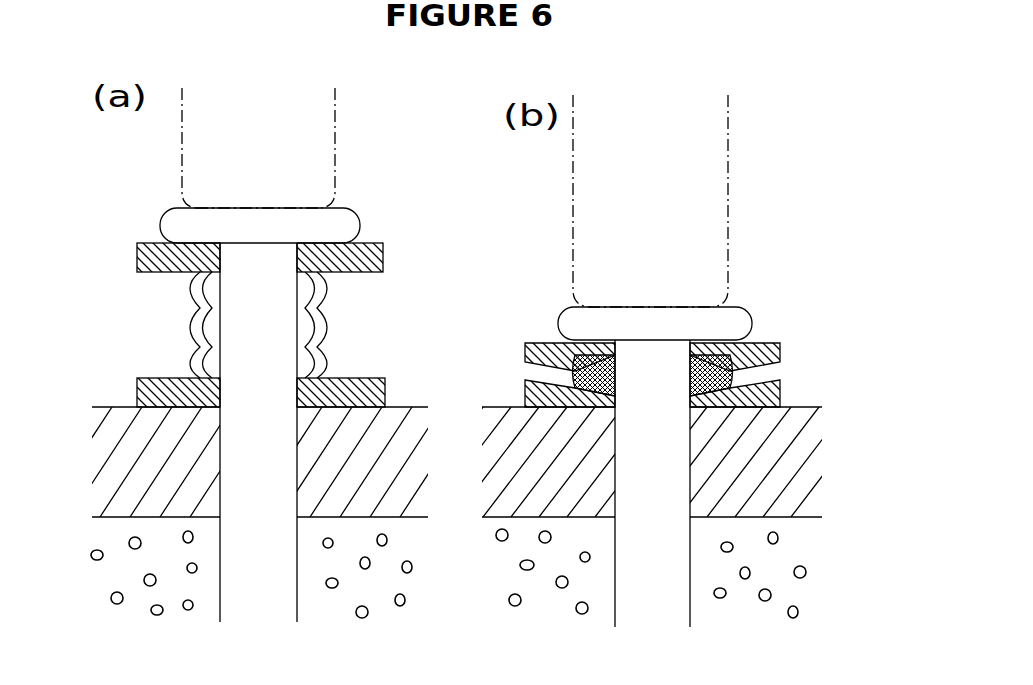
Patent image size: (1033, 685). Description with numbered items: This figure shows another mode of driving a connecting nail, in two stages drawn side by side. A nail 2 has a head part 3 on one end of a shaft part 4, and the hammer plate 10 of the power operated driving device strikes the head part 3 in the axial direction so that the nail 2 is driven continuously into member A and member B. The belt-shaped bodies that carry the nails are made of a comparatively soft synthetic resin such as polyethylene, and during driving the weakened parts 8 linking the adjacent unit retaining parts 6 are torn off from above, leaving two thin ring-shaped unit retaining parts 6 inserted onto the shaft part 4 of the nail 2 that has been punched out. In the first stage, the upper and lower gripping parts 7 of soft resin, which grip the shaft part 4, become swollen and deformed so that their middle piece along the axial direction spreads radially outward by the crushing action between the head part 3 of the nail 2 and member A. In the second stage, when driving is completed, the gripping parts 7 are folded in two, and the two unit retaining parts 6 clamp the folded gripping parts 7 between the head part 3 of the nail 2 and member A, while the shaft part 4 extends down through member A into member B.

The nail 2 is at (222, 205).
The head part 3 is at (340, 218).
The shaft part 4 is at (270, 470).
The unit retaining part 6 is at (157, 378).
The gripping part 7 is at (193, 342).
The weakened part 8 is at (138, 258).
The hammer plate 10 is at (312, 165).
The member A is at (150, 466).
The member B is at (144, 563).